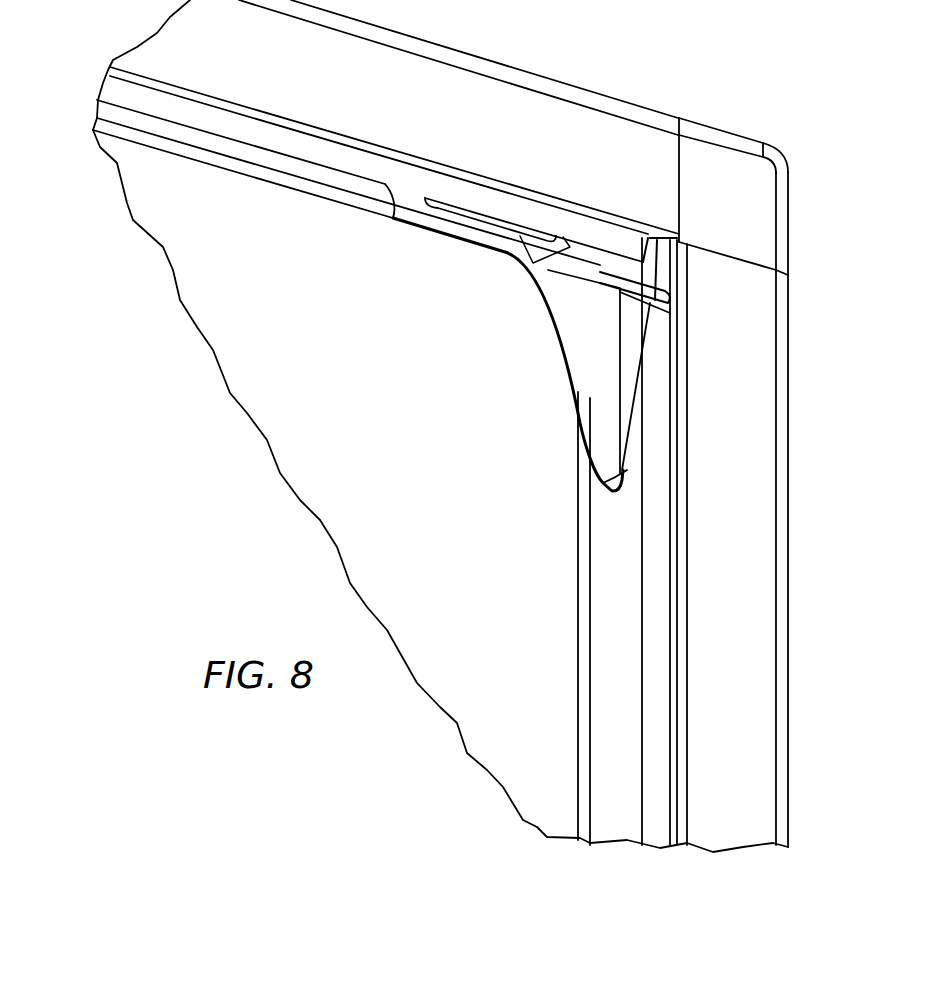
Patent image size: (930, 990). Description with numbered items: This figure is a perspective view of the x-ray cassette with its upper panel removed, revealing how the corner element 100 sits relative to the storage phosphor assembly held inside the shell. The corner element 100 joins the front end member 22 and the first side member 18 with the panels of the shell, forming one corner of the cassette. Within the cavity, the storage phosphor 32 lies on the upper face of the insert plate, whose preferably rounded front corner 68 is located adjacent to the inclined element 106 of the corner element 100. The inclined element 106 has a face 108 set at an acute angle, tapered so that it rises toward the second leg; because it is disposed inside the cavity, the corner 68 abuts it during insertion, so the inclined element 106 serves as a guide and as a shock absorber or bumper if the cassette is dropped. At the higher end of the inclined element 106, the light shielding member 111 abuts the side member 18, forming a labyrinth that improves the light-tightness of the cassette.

The first side member 18 is at (755, 628).
The front end member 22 is at (573, 115).
The storage phosphor 32 is at (393, 466).
The corner 68 is at (530, 292).
The corner element 100 is at (717, 162).
The inclined element 106 is at (622, 358).
The face 108 is at (583, 345).
The light shielding member 111 is at (655, 285).